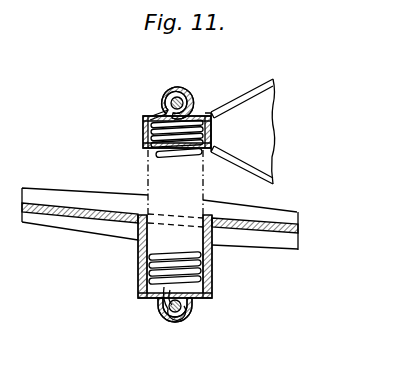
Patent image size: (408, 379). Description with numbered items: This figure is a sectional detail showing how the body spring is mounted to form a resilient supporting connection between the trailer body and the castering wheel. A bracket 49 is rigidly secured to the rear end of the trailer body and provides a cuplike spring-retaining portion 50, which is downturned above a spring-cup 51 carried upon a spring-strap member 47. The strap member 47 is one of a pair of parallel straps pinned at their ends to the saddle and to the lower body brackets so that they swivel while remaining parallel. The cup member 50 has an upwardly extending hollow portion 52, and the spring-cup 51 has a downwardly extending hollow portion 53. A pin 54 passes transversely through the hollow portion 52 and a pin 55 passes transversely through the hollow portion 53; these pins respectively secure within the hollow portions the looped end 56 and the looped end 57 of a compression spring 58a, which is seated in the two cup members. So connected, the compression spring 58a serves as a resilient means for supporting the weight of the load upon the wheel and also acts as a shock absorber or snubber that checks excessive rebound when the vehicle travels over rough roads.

The spring-strap member 47 is at (283, 233).
The bracket 49 is at (256, 106).
The cuplike spring-retaining portion 50 is at (143, 118).
The spring-cup 51 is at (212, 280).
The upwardly extending hollow portion 52 is at (196, 103).
The downwardly extending hollow portion 53 is at (191, 315).
The pin 54 is at (168, 100).
The pin 55 is at (165, 314).
The looped end 56 is at (181, 90).
The looped end 57 is at (174, 318).
The compression spring 58a is at (158, 155).